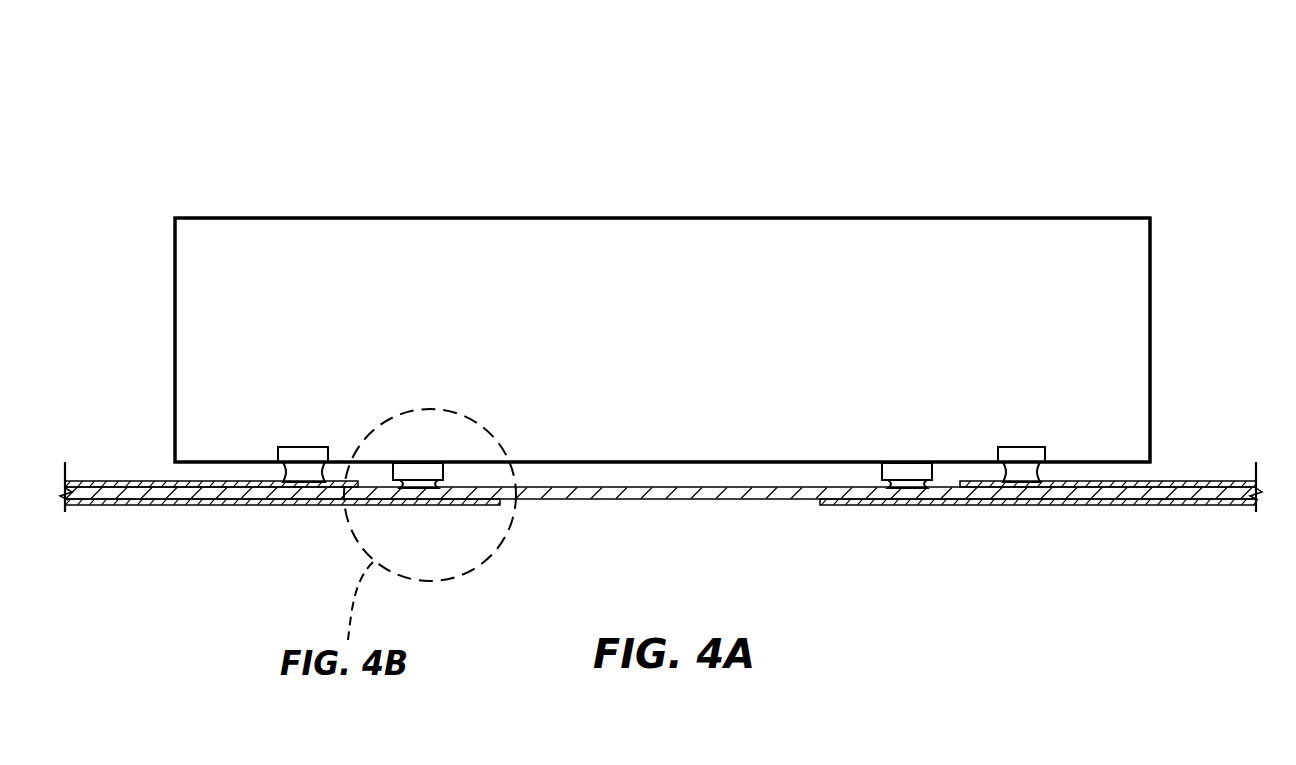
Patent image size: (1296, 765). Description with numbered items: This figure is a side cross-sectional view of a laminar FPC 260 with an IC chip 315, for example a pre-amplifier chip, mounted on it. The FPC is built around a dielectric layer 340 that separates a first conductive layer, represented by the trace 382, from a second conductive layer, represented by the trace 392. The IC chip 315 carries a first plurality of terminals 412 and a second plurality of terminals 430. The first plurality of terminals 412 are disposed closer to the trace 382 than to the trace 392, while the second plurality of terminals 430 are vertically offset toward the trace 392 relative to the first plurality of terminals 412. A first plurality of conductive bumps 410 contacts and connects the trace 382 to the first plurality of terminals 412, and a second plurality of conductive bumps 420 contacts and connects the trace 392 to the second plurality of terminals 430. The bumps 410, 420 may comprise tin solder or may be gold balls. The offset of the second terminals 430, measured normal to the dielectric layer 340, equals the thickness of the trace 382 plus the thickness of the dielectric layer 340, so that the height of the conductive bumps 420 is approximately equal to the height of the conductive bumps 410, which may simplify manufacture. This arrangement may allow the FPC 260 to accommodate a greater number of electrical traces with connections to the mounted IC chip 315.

The laminar FPC 260 is at (724, 132).
The IC chip 315 is at (290, 218).
The first plurality of terminals 412 is at (302, 455).
The first plurality of conductive bumps 410 is at (300, 470).
The second plurality of terminals 430 is at (412, 472).
The second plurality of conductive bumps 420 is at (432, 492).
The trace 382 is at (145, 482).
The dielectric layer 340 is at (705, 500).
The trace 392 is at (160, 508).